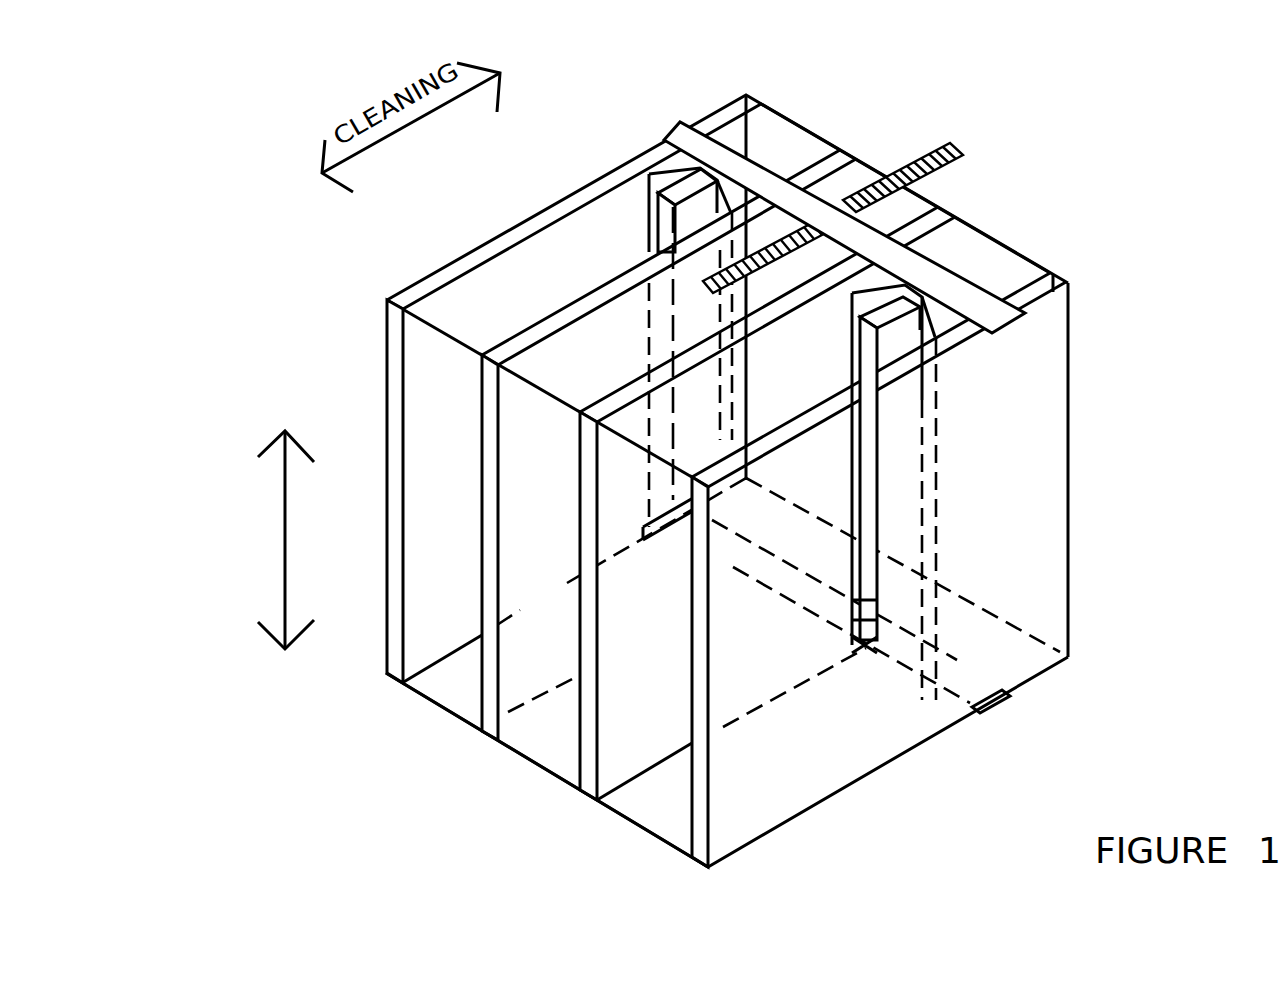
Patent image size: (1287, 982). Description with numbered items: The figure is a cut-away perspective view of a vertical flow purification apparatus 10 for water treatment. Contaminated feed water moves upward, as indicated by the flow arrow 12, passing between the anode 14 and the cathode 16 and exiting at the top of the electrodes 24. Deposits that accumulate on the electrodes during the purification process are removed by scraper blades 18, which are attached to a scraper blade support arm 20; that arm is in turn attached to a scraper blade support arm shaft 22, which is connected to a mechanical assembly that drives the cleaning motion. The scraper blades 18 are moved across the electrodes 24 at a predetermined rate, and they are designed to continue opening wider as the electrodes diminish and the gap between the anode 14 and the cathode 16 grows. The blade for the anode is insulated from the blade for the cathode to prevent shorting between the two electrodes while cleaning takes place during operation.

The vertical flow purification apparatus 10 is at (1090, 442).
The flow arrow 12 is at (280, 660).
The anode 14 is at (580, 800).
The cathode 16 is at (1068, 266).
The scraper blades 18 is at (637, 208).
The scraper blade support arm 20 is at (700, 138).
The scraper blade support arm shaft 22 is at (960, 178).
The electrodes 24 is at (680, 698).